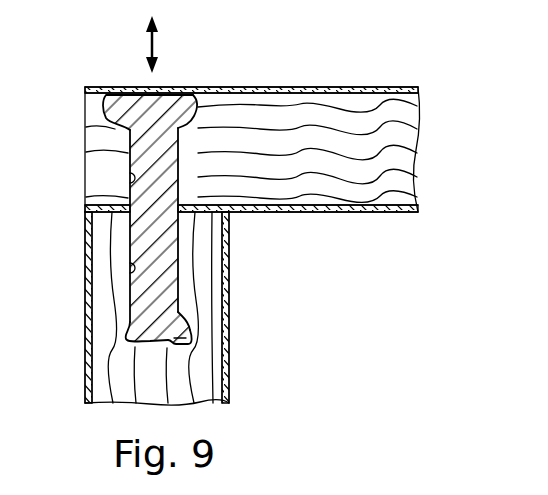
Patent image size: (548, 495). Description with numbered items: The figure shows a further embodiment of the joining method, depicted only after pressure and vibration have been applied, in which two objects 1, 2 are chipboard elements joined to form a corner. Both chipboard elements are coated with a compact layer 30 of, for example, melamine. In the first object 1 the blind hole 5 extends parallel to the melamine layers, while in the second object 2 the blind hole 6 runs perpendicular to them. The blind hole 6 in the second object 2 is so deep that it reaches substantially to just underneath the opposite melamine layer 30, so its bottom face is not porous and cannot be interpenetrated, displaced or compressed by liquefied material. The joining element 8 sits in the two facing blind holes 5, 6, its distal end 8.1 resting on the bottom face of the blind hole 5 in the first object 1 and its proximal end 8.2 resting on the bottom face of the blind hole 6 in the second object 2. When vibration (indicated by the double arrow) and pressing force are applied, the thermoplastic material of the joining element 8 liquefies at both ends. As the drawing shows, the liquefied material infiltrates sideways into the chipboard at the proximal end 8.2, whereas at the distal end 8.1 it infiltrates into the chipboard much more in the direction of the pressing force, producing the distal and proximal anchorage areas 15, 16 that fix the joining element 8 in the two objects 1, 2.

The first object 1 is at (203, 297).
The second object 2 is at (333, 118).
The blind hole 5 is at (133, 277).
The blind hole 6 is at (130, 183).
The joining element 8 is at (153, 200).
The distal end 8.1 is at (153, 342).
The proximal end 8.2 is at (149, 79).
The distal anchorage area 15 is at (182, 340).
The proximal anchorage area 16 is at (187, 105).
The compact layer 30 is at (273, 90).